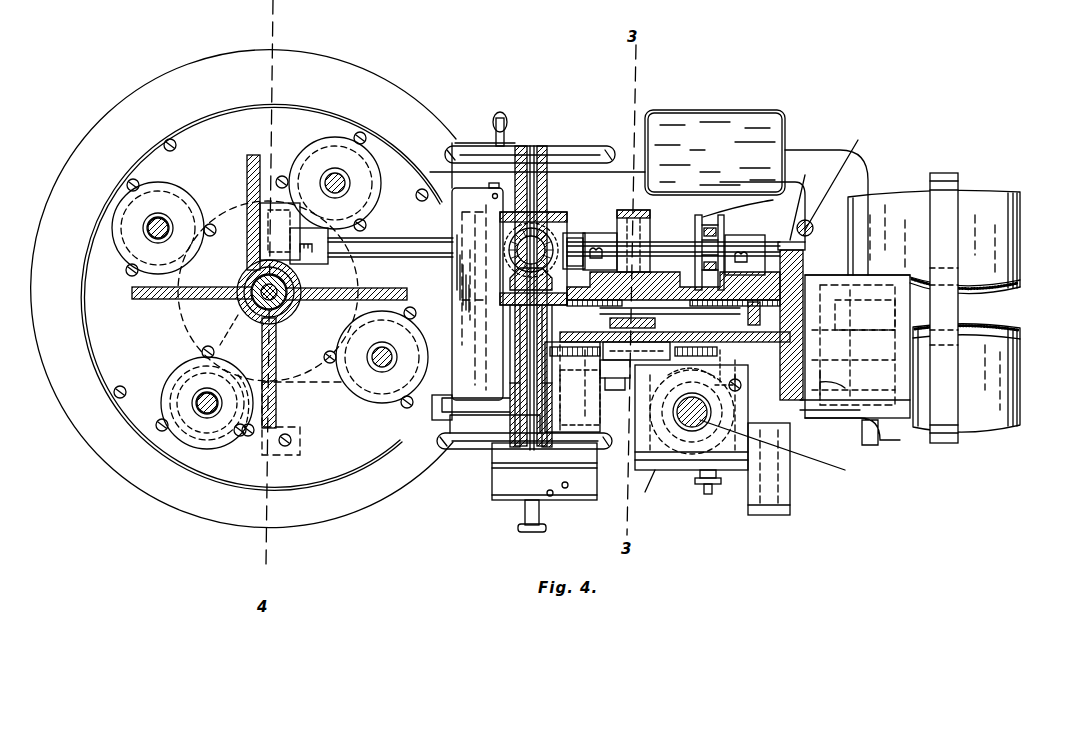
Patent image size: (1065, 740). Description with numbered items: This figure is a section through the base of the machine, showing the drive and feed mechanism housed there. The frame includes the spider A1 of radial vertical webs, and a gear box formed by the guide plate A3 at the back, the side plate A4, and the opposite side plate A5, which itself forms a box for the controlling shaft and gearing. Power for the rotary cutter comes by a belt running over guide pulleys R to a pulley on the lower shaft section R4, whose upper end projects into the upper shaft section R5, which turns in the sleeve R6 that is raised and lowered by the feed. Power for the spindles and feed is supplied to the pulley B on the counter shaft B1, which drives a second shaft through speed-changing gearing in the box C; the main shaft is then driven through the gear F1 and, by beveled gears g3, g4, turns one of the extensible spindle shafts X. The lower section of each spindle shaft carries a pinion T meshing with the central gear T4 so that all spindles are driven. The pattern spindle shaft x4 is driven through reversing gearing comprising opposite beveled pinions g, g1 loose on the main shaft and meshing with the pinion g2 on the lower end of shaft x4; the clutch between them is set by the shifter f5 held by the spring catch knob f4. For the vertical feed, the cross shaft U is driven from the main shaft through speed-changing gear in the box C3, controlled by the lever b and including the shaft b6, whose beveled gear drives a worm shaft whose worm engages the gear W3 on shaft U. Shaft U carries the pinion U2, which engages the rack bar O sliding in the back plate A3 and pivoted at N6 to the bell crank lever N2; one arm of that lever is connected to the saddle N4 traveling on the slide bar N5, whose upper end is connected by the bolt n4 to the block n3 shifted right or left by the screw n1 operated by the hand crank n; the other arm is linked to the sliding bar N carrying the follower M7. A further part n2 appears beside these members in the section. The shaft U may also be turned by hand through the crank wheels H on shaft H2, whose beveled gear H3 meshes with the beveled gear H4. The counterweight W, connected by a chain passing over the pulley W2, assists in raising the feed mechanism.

The pinion T is at (125, 223).
The central gear T4 is at (180, 312).
The extensible shaft X is at (165, 218).
The cross shaft U is at (385, 250).
The pinion U2 is at (650, 238).
The gear W3 is at (599, 234).
The shaft section R4 is at (290, 310).
The upper shaft section R5 is at (252, 312).
The sleeve R6 is at (243, 280).
The spider A1 is at (217, 329).
The beveled gear g3 is at (245, 440).
The beveled gear g4 is at (200, 435).
The crank wheel H is at (577, 150).
The shaft H2 is at (545, 240).
The beveled gear H3 is at (585, 242).
The beveled gear H4 is at (548, 238).
The counter weight W is at (715, 152).
The pulley W2 is at (754, 212).
The rack bar O is at (574, 263).
The bell crank lever N2 is at (696, 258).
The follower M7 is at (843, 174).
The guide plate A3 is at (807, 193).
The side plate A4 is at (806, 262).
The side plate A5 is at (498, 292).
The sliding bar N is at (813, 228).
The screw n1 is at (673, 317).
The saddle N4 is at (675, 325).
The slide bar N5 is at (605, 325).
The pivot connection N6 is at (640, 305).
The bolt n4 is at (633, 348).
The pin n2 is at (614, 361).
The block n3 is at (726, 372).
The hand crank n is at (857, 360).
The shaft b6 is at (572, 387).
The box C3 is at (492, 490).
The lever b is at (545, 530).
The box C is at (685, 470).
The beveled pinion g is at (740, 470).
The beveled pinion g1 is at (645, 484).
The beveled pinion g2 is at (687, 369).
The spring catch knob f4 is at (700, 484).
The shifter f5 is at (708, 496).
The gear F1 is at (775, 480).
The flexible and extensible shaft x4 is at (783, 449).
The guide pulley R is at (985, 205).
The pulley B is at (932, 445).
The counter shaft B1 is at (968, 314).